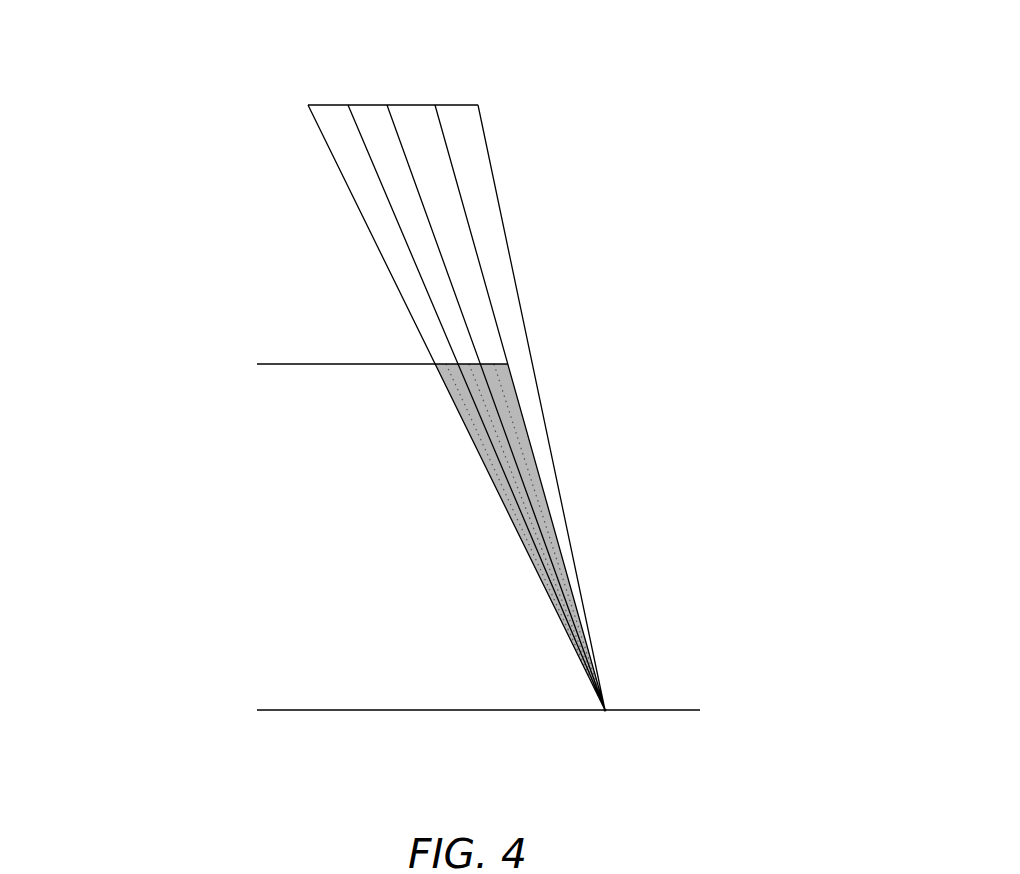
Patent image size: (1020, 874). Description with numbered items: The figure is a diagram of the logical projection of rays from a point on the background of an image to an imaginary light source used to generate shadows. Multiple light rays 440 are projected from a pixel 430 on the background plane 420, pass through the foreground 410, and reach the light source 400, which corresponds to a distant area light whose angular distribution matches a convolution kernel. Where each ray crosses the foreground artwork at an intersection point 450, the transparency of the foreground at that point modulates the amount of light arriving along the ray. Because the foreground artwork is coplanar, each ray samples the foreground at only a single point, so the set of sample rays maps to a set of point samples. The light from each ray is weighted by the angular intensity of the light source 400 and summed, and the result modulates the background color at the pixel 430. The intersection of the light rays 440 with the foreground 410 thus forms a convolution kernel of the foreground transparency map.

The light source 400 is at (395, 68).
The foreground 410 is at (355, 352).
The background plane 420 is at (345, 703).
The pixel 430 is at (615, 713).
The light rays 440 is at (525, 260).
The intersection point 450 is at (430, 378).